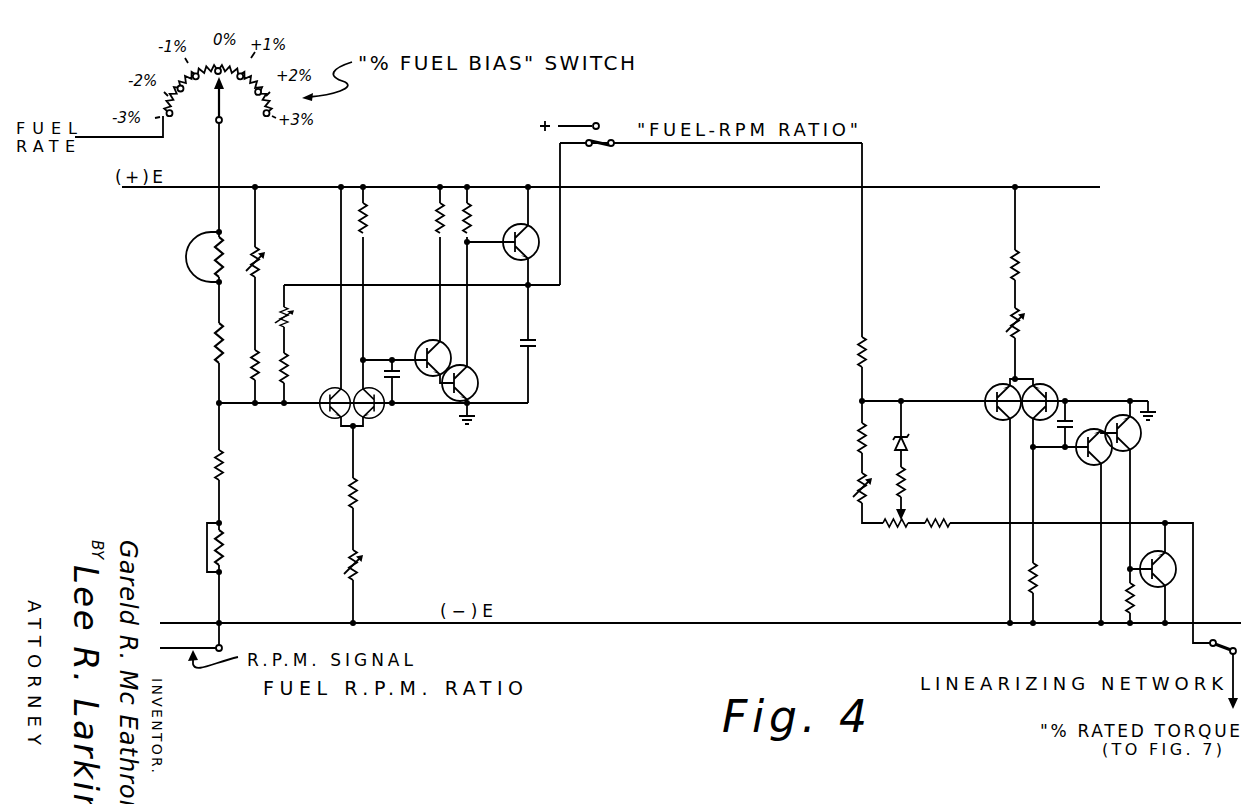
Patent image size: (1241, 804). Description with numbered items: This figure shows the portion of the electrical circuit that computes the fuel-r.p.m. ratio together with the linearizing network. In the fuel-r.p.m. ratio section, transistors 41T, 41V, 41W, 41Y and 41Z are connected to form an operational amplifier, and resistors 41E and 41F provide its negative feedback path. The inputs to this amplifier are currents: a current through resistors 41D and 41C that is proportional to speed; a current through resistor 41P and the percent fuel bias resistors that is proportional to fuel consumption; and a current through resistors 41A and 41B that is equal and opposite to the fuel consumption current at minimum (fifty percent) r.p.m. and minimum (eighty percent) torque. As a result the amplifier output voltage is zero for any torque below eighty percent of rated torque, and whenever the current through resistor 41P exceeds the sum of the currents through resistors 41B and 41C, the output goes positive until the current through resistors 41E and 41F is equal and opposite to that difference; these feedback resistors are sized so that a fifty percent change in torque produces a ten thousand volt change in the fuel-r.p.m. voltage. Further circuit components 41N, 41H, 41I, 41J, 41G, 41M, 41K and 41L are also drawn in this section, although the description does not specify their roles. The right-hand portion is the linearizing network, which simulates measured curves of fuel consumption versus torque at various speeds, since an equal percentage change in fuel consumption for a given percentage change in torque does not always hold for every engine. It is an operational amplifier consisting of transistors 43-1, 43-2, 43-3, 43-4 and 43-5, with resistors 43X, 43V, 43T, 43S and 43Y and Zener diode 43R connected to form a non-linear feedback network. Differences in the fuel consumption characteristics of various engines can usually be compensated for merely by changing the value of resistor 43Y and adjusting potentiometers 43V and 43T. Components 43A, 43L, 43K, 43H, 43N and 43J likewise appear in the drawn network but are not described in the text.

The resistor 41N is at (190, 272).
The resistor 41P is at (200, 357).
The resistor 41C is at (205, 477).
The resistor 41D is at (255, 556).
The resistor 41A is at (260, 268).
The resistor 41B is at (256, 366).
The resistor 41E is at (288, 330).
The resistor 41F is at (286, 378).
The resistor 41H is at (380, 232).
The resistor 41I is at (428, 224).
The resistor 41J is at (472, 222).
The transistor 41Z is at (545, 240).
The capacitor 41G is at (551, 344).
The transistor 41W is at (418, 350).
The transistor 41Y is at (470, 392).
The capacitor 41M is at (402, 372).
The transistor 41T is at (320, 421).
The transistor 41V is at (400, 421).
The resistor 41K is at (358, 506).
The variable resistor 41L is at (362, 577).
The resistor 43A is at (868, 364).
The resistor 43S is at (850, 449).
The potentiometer 43T is at (846, 502).
The Zener diode 43R is at (908, 449).
The resistor 43Y is at (906, 493).
The potentiometer 43V is at (898, 538).
The resistor 43X is at (956, 538).
The resistor 43L is at (1032, 277).
The variable resistor 43K is at (1046, 333).
The transistor 43-1 is at (978, 388).
The transistor 43-2 is at (1046, 390).
The resistor 43H is at (1050, 587).
The capacitor 43N is at (1058, 445).
The transistor 43-3 is at (1112, 466).
The transistor 43-4 is at (1142, 446).
The resistor 43J is at (1124, 626).
The transistor 43-5 is at (1178, 572).